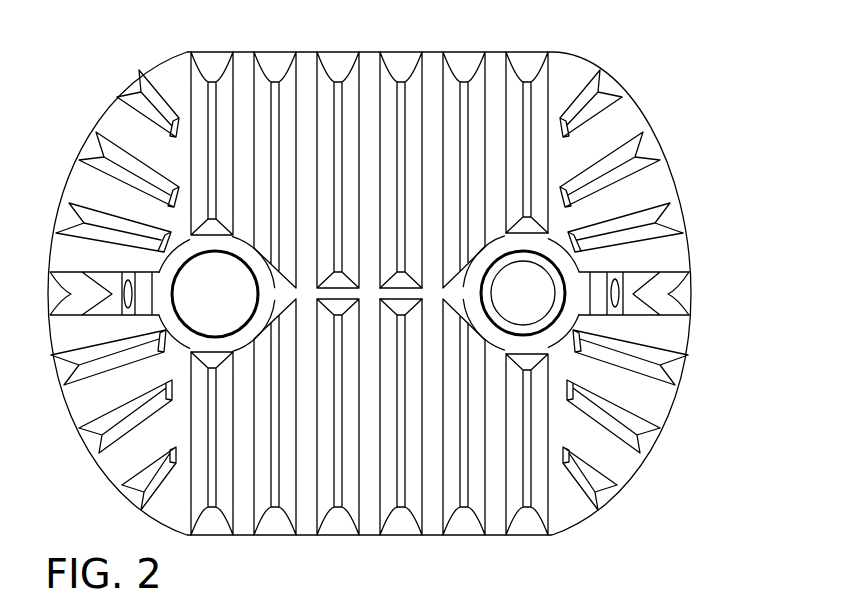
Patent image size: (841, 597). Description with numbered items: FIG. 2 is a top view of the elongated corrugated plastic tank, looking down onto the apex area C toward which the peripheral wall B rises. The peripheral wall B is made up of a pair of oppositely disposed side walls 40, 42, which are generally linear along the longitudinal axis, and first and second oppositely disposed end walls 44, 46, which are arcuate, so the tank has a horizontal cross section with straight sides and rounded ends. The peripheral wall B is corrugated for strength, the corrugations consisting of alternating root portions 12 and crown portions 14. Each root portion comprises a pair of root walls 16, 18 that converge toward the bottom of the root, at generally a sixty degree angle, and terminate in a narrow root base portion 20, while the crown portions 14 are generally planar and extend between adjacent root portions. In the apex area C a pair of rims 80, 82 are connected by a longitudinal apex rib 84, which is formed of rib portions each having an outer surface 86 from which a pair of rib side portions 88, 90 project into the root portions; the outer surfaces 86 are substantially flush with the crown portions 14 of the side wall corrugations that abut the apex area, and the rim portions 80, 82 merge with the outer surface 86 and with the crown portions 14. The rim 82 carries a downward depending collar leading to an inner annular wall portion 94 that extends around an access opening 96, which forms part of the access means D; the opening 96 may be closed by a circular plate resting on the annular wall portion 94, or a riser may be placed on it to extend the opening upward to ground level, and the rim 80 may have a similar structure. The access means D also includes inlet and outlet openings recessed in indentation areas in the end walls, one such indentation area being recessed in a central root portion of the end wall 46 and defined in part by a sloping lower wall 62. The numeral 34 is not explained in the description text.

The root portions 12 is at (535, 60).
The crown portions 14 is at (490, 62).
The root wall 16 is at (385, 507).
The root wall 18 is at (413, 505).
The root base portion 20 is at (401, 500).
The fin 34 is at (213, 525).
The side wall 40 is at (320, 542).
The side wall 42 is at (409, 44).
The first end wall 44 is at (60, 158).
The second end wall 46 is at (706, 302).
The sloping lower wall 62 is at (640, 270).
The rim 80 is at (230, 251).
The rim 82 is at (530, 242).
The longitudinal apex rib 84 is at (365, 276).
The outer surface 86 is at (349, 292).
The rib side portion 88 is at (333, 272).
The rib side portion 90 is at (330, 303).
The inner annular wall portion 94 is at (553, 290).
The access opening 96 is at (537, 290).
The peripheral wall B is at (305, 68).
The apex area C is at (432, 255).
The access means D is at (614, 320).